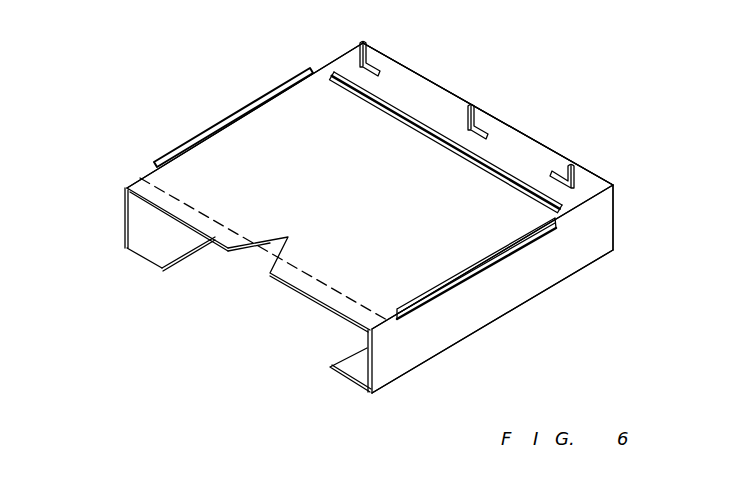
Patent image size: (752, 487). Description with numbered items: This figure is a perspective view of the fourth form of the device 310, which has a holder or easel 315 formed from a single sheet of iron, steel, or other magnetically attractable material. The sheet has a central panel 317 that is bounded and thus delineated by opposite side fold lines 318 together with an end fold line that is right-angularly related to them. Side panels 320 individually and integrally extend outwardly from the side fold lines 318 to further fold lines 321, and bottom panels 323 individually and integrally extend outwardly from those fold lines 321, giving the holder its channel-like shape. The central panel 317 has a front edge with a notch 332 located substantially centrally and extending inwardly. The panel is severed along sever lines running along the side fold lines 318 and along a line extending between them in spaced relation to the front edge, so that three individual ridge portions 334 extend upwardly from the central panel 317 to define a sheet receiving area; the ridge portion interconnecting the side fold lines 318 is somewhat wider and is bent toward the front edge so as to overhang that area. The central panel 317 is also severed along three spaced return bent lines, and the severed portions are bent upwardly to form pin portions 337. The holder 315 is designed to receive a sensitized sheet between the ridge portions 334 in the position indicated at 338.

The device 310 is at (567, 284).
The holder or easel 315 is at (444, 78).
The central panel 317 is at (435, 83).
The side fold lines 318 is at (140, 180).
The side panels 320 is at (140, 220).
The fold lines 321 is at (150, 250).
The bottom panels 323 is at (152, 233).
The notch 332 is at (287, 240).
The ridge portions 334 is at (280, 90).
The pin portions 337 is at (363, 42).
The sensitized sheet position 338 is at (202, 211).